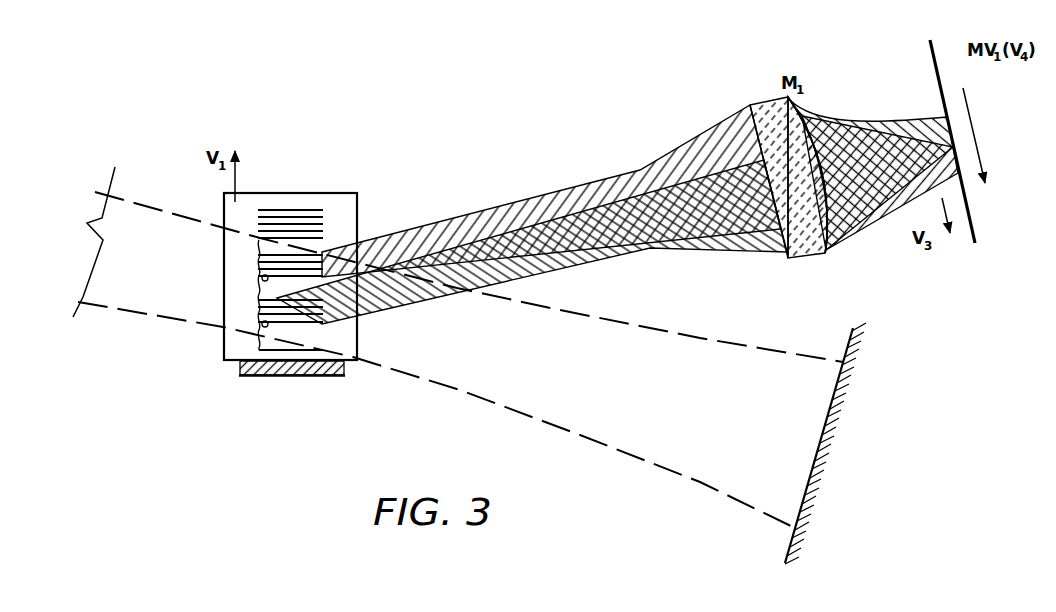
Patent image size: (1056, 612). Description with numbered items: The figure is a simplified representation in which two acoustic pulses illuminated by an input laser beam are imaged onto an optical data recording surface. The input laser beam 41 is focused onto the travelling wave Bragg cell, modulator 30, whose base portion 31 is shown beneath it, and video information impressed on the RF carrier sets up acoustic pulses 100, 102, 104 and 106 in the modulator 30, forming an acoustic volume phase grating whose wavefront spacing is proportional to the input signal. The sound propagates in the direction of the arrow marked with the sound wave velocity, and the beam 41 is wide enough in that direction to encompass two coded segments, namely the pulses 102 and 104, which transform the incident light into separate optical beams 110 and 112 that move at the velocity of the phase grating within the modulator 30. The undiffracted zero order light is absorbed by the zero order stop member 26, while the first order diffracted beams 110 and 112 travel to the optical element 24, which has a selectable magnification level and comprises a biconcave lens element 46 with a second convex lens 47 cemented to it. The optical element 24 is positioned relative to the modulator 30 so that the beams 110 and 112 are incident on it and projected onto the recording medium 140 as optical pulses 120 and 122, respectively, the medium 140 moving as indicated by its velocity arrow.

The optical element 24 is at (791, 171).
The zero order stop member 26 is at (848, 349).
The acousto-optic modulator 30 is at (228, 363).
The base 31 is at (343, 375).
The input laser beam 41 is at (170, 223).
The biconcave lens element 46 is at (790, 259).
The second convex lens 47 is at (828, 244).
The acoustic pulse 100 is at (323, 215).
The acoustic pulse 102 is at (265, 272).
The acoustic pulse 104 is at (261, 317).
The acoustic pulse 106 is at (326, 353).
The optical beam 110 is at (490, 221).
The optical beam 112 is at (537, 272).
The optical pulse 120 is at (935, 184).
The optical pulse 122 is at (946, 118).
The recording medium 140 is at (970, 237).